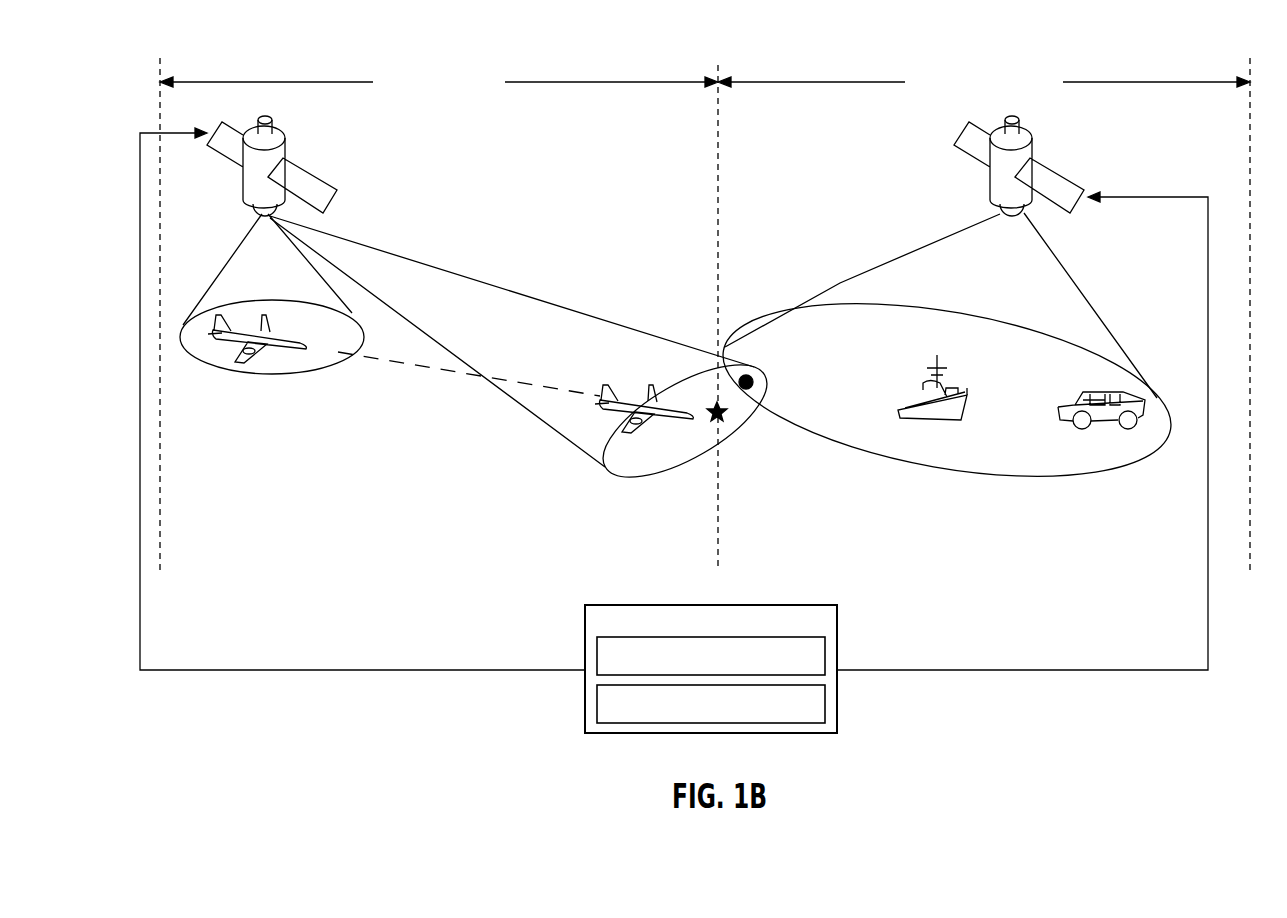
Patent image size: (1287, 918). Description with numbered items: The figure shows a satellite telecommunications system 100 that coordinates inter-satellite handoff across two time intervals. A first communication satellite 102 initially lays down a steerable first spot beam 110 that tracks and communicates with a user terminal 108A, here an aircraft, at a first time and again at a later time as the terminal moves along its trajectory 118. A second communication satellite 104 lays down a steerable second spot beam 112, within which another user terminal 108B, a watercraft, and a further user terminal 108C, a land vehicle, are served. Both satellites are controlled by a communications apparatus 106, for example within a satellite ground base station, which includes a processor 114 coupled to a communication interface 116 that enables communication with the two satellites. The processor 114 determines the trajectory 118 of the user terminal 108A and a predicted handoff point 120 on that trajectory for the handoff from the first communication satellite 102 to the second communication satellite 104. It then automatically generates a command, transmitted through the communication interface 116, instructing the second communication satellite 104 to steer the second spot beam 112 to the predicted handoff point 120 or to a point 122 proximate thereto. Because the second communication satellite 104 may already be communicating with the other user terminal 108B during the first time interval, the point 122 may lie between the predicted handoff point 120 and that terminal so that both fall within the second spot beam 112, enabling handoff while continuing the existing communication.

The system 100 is at (722, 43).
The first communication satellite 102 is at (312, 168).
The second communication satellite 104 is at (1050, 172).
The communications apparatus 106 is at (717, 604).
The user terminal 108A is at (289, 334).
The other user terminal 108B is at (923, 415).
The user terminal 108C is at (1098, 428).
The first spot beam 110 is at (692, 507).
The second spot beam 112 is at (1022, 495).
The processor 114 is at (762, 664).
The communication interface 116 is at (818, 712).
The trajectory 118 is at (467, 370).
The predicted handoff point 120 is at (709, 423).
The point proximate the predicted handoff point 122 is at (751, 378).